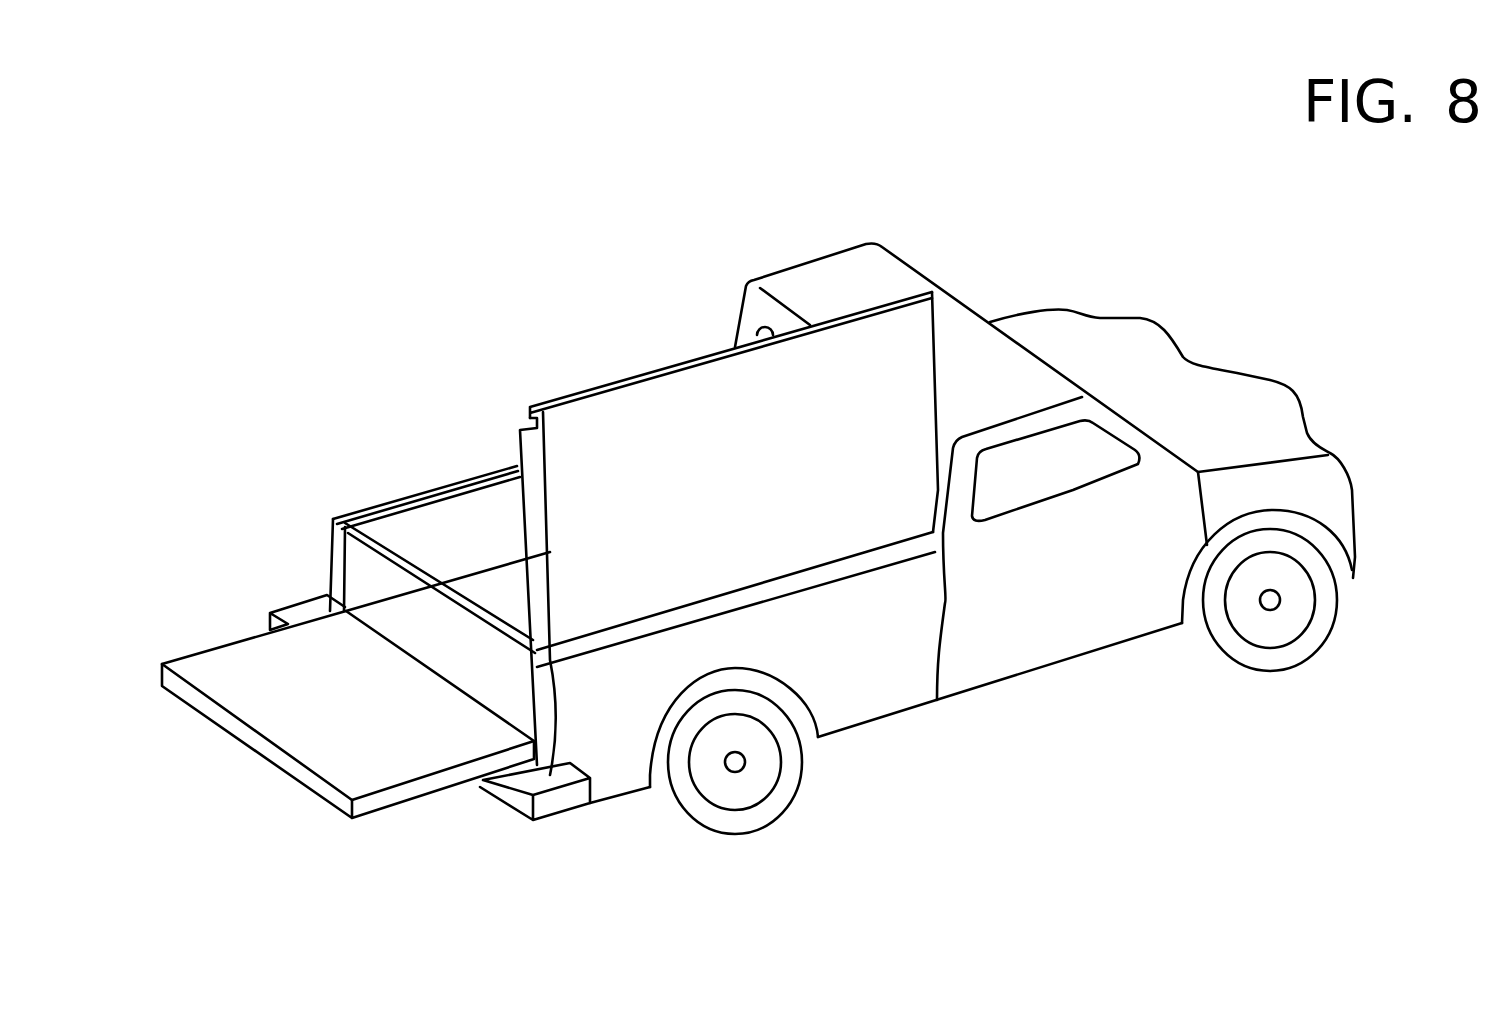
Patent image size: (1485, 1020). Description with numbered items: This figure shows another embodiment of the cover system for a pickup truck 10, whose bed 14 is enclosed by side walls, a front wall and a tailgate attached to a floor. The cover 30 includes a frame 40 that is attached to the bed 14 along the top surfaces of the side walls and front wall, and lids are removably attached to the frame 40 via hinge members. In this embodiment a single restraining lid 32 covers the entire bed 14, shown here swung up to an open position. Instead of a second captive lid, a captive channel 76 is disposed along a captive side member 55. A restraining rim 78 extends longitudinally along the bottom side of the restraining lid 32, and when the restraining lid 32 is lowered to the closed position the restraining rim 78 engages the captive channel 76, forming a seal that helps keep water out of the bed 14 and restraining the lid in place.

The pickup truck 10 is at (800, 160).
The bed 14 is at (492, 597).
The cover 30 is at (666, 336).
The restraining lid 32 is at (825, 505).
The frame 40 is at (385, 551).
The captive side member 55 is at (327, 596).
The captive channel 76 is at (520, 467).
The restraining rim 78 is at (903, 293).